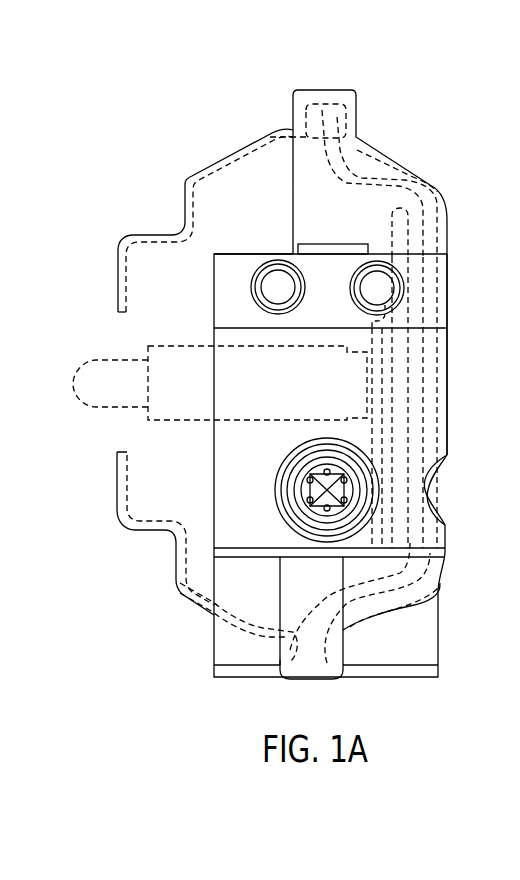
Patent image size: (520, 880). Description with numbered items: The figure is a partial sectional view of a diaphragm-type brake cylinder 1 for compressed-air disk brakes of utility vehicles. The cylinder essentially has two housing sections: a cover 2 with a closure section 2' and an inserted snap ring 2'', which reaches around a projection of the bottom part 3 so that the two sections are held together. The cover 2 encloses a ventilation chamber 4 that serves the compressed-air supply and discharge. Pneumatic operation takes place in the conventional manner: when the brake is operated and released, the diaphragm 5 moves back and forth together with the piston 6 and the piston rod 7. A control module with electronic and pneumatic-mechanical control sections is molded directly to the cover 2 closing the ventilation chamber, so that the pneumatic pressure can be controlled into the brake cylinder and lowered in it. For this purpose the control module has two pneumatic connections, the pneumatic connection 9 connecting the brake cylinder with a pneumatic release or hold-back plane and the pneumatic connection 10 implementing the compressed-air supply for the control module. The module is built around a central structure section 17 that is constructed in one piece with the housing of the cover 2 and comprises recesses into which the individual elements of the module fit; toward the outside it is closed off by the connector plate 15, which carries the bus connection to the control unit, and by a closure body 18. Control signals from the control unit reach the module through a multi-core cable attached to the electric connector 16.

The diaphragm-type brake cylinder 1 is at (440, 103).
The cover 2 is at (472, 325).
The closure section 2' is at (379, 143).
The snap ring 2'' is at (308, 84).
The bottom part 3 is at (228, 160).
The ventilation chamber 4 is at (430, 207).
The diaphragm 5 is at (393, 582).
The piston 6 is at (395, 529).
The piston rod 7 is at (175, 405).
The pneumatic connection 9 is at (380, 289).
The pneumatic connection 10 is at (276, 289).
The connector plate 15 is at (440, 554).
The electric connector 16 is at (345, 489).
The central structure section 17 is at (446, 377).
The closure body 18 is at (449, 308).